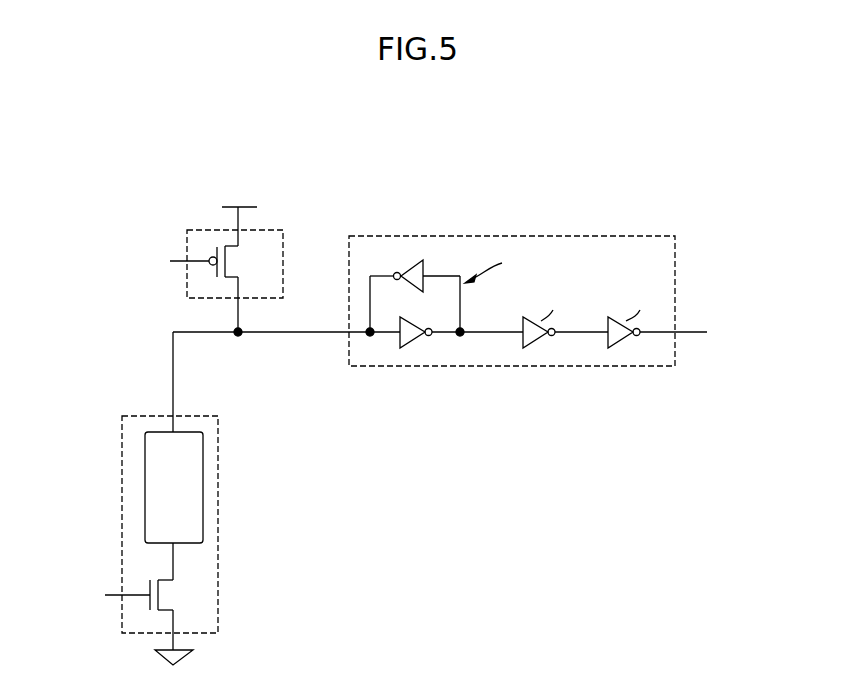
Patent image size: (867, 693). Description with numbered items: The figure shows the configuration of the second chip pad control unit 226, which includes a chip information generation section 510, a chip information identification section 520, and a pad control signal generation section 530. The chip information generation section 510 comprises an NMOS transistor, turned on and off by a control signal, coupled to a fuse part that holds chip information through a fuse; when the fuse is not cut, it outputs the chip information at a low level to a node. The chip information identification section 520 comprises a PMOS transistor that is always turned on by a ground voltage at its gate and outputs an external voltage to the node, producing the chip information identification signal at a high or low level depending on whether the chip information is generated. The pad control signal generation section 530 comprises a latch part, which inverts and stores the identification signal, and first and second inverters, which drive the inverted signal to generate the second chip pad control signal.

The second chip pad control unit 226 is at (123, 155).
The chip information generation section 510 is at (218, 465).
The chip information identification section 520 is at (283, 262).
The pad control signal generation section 530 is at (583, 236).